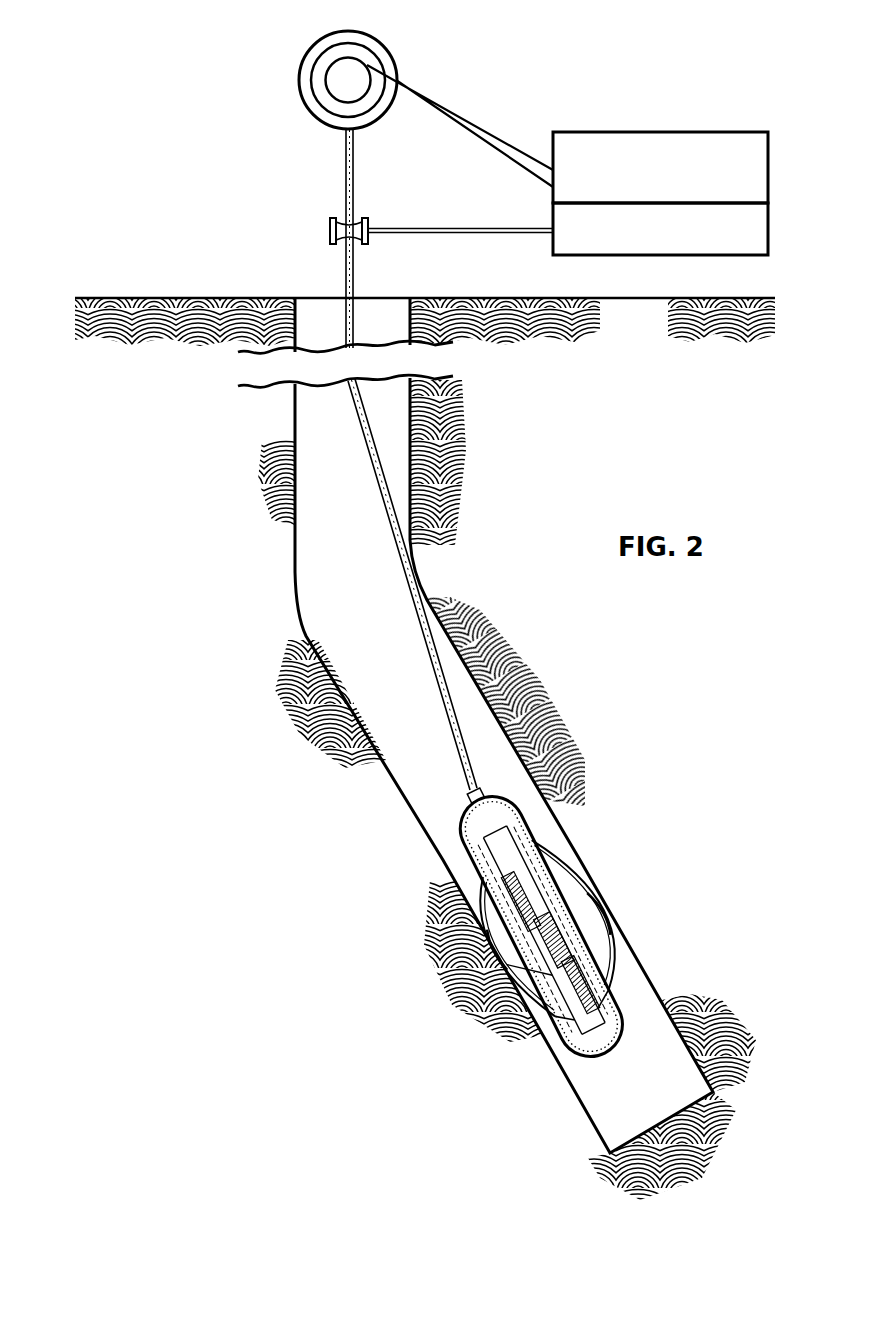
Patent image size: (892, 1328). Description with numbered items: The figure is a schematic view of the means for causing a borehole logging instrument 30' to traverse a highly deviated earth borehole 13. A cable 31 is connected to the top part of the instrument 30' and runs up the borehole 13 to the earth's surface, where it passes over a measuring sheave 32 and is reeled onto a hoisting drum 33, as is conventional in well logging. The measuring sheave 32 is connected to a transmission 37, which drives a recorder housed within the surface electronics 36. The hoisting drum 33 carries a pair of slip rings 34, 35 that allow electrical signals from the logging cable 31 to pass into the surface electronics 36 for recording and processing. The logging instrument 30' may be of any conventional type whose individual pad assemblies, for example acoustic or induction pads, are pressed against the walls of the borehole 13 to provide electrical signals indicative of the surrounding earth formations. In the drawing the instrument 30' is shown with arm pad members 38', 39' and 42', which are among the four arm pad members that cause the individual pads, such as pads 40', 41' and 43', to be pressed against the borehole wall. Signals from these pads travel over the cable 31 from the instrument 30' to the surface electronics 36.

The earth borehole 13 is at (400, 448).
The borehole logging instrument 30' is at (534, 924).
The cable 31 is at (415, 562).
The measuring sheave 32 is at (371, 222).
The hoisting drum 33 is at (383, 45).
The slip ring 34 is at (325, 68).
The slip ring 35 is at (340, 46).
The surface electronics 36 is at (728, 128).
The transmission 37 is at (771, 248).
The arm pad member 38' is at (609, 895).
The arm pad member 39' is at (465, 968).
The pad 40' is at (630, 900).
The pad 41' is at (479, 973).
The arm pad member 42' is at (644, 966).
The pad 43' is at (508, 1019).